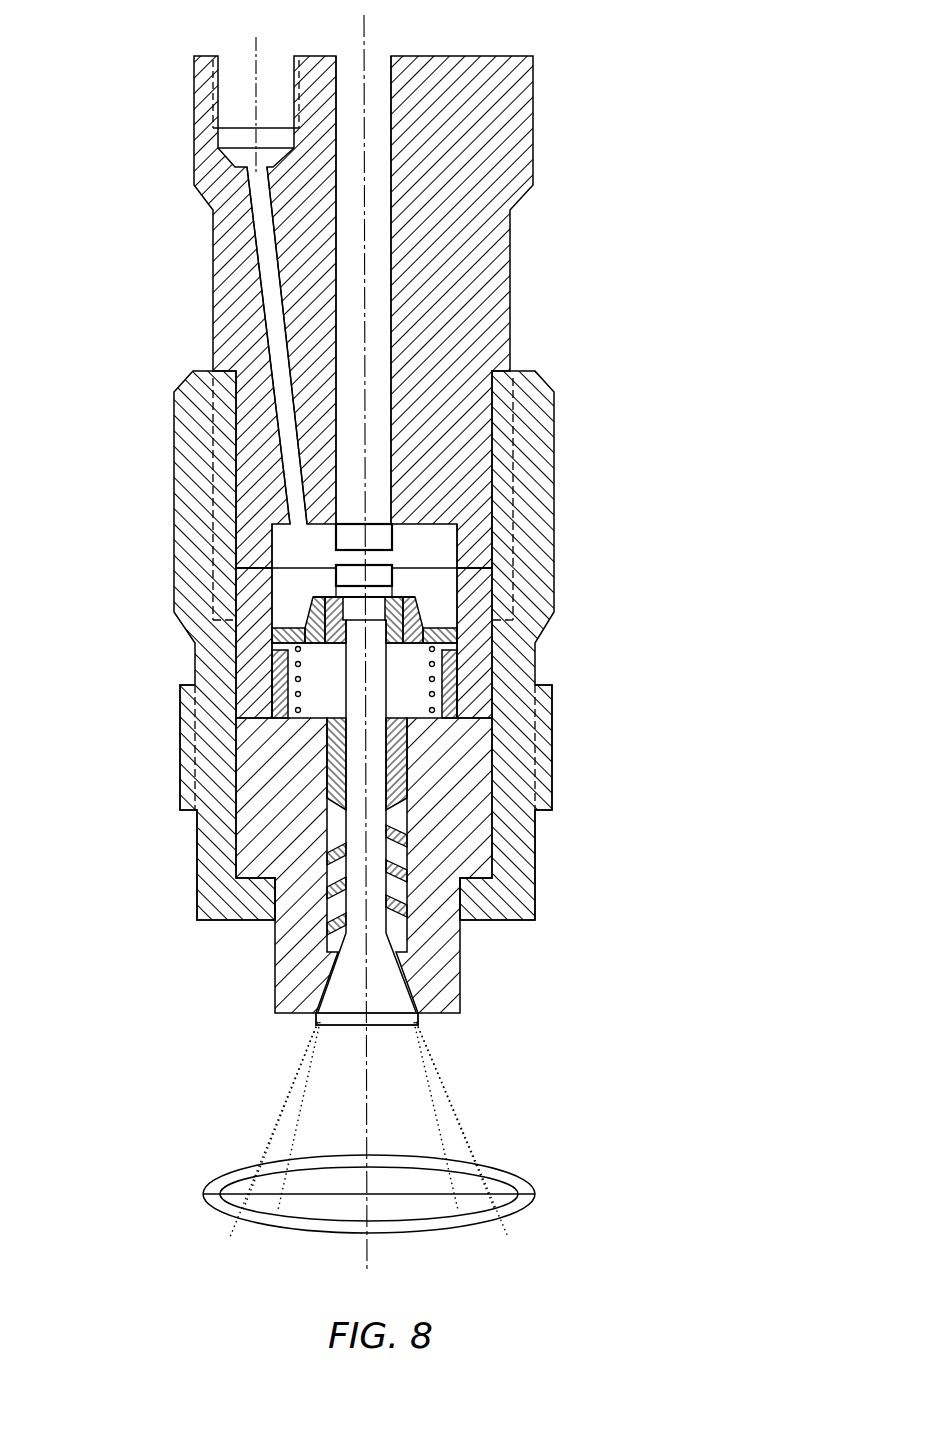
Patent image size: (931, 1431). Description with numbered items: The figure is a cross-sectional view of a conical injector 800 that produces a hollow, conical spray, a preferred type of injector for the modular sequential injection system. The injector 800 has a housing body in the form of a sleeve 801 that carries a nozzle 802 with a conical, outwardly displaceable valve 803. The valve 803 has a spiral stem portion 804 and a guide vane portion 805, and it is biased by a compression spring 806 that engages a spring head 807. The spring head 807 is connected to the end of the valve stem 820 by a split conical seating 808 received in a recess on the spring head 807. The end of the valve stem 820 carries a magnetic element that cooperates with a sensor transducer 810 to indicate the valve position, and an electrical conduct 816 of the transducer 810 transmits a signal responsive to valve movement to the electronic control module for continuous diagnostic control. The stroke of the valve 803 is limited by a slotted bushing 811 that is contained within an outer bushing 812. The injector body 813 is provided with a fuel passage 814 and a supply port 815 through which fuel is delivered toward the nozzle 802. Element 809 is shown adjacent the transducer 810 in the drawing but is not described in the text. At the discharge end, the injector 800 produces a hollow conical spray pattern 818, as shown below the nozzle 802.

The injector 800 is at (111, 1134).
The sleeve 801 is at (312, 806).
The nozzle 802 is at (267, 865).
The valve 803 is at (285, 979).
The spiral stem portion 804 is at (445, 802).
The guide vane portion 805 is at (489, 786).
The compression spring 806 is at (458, 621).
The spring head 807 is at (481, 628).
The split conical seating 808 is at (480, 607).
The piston block 809 is at (451, 534).
The sensor transducer 810 is at (512, 494).
The slotted bushing 811 is at (258, 675).
The outer bushing 812 is at (303, 645).
The injector body 813 is at (297, 312).
The fuel passage 814 is at (207, 345).
The supply port 815 is at (224, 90).
The electrical conduct 816 is at (478, 290).
The hollow conical spray pattern 818 is at (414, 1129).
The valve stem 820 is at (497, 562).